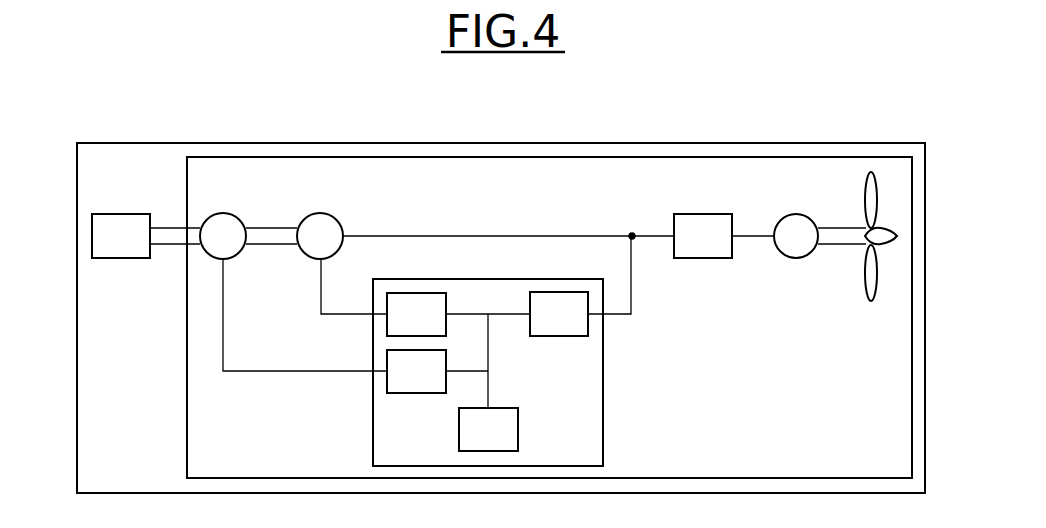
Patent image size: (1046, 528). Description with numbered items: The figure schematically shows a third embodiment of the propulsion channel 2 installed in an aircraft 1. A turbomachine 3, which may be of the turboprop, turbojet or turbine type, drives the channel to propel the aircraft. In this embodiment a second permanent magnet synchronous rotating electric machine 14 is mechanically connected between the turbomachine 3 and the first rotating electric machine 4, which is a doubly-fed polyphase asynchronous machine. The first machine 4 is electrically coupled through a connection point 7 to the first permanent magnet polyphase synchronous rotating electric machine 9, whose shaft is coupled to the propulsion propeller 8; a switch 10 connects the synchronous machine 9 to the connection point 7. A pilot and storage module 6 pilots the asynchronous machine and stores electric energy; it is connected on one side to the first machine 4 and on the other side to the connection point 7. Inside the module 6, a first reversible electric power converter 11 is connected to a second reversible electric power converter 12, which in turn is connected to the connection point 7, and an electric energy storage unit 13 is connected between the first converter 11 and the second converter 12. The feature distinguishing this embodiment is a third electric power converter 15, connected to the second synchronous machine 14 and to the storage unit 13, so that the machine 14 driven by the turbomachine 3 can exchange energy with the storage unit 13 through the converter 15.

The aircraft 1 is at (503, 143).
The propulsion channel 2 is at (549, 157).
The turbomachine 3 is at (121, 236).
The first rotating electric machine 4 is at (320, 236).
The pilot and storage module 6 is at (603, 374).
The connection point 7 is at (632, 232).
The propulsion propeller 8 is at (871, 171).
The first permanent magnet polyphase synchronous rotating electric machine 9 is at (796, 236).
The switch 10 is at (703, 236).
The first reversible electric power converter 11 is at (416, 314).
The second reversible electric power converter 12 is at (559, 314).
The electric energy storage unit 13 is at (488, 429).
The second permanent magnet synchronous rotating electric machine 14 is at (223, 236).
The third electric power converter 15 is at (416, 371).